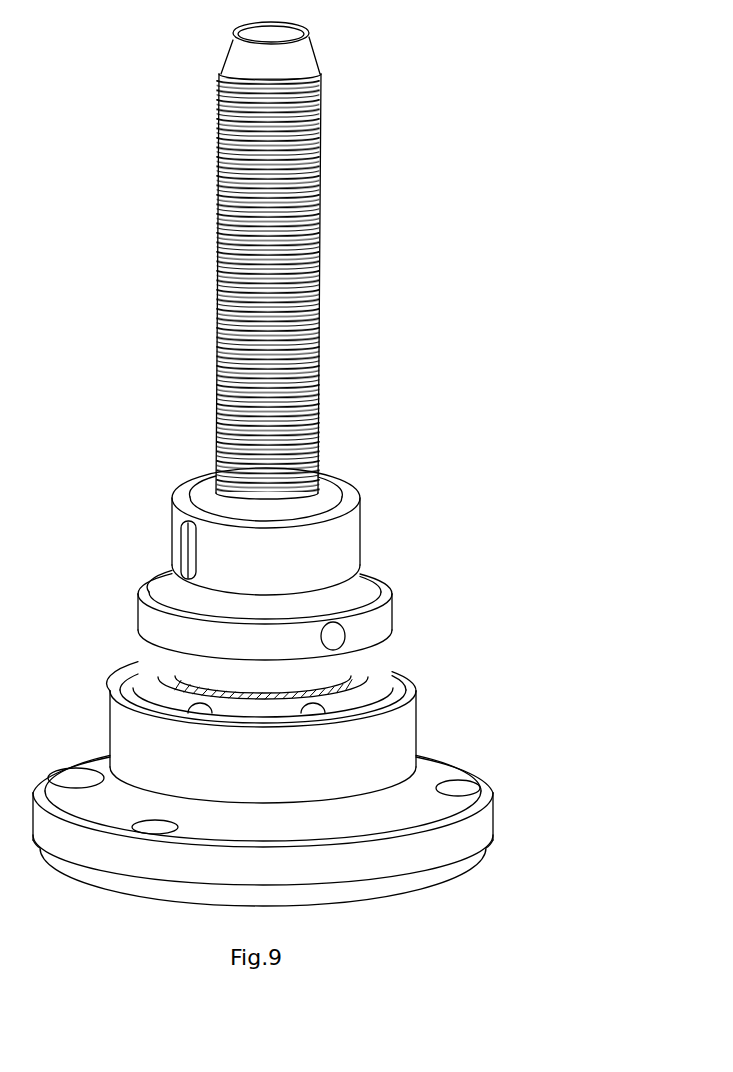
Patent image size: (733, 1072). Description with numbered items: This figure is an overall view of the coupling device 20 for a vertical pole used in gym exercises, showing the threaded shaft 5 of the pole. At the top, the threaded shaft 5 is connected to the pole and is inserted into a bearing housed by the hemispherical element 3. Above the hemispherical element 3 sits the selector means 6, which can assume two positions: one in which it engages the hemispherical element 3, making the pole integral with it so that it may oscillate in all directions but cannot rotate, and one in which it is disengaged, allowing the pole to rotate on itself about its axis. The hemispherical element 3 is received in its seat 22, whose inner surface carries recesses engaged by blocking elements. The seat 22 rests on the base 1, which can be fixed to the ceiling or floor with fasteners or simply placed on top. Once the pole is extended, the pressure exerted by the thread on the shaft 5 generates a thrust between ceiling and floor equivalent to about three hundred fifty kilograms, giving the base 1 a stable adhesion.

The coupling device 20 is at (503, 247).
The threaded shaft 5 is at (290, 247).
The selector means 6 is at (333, 542).
The hemispherical element 3 is at (370, 675).
The seat 22 is at (377, 737).
The base 1 is at (402, 852).